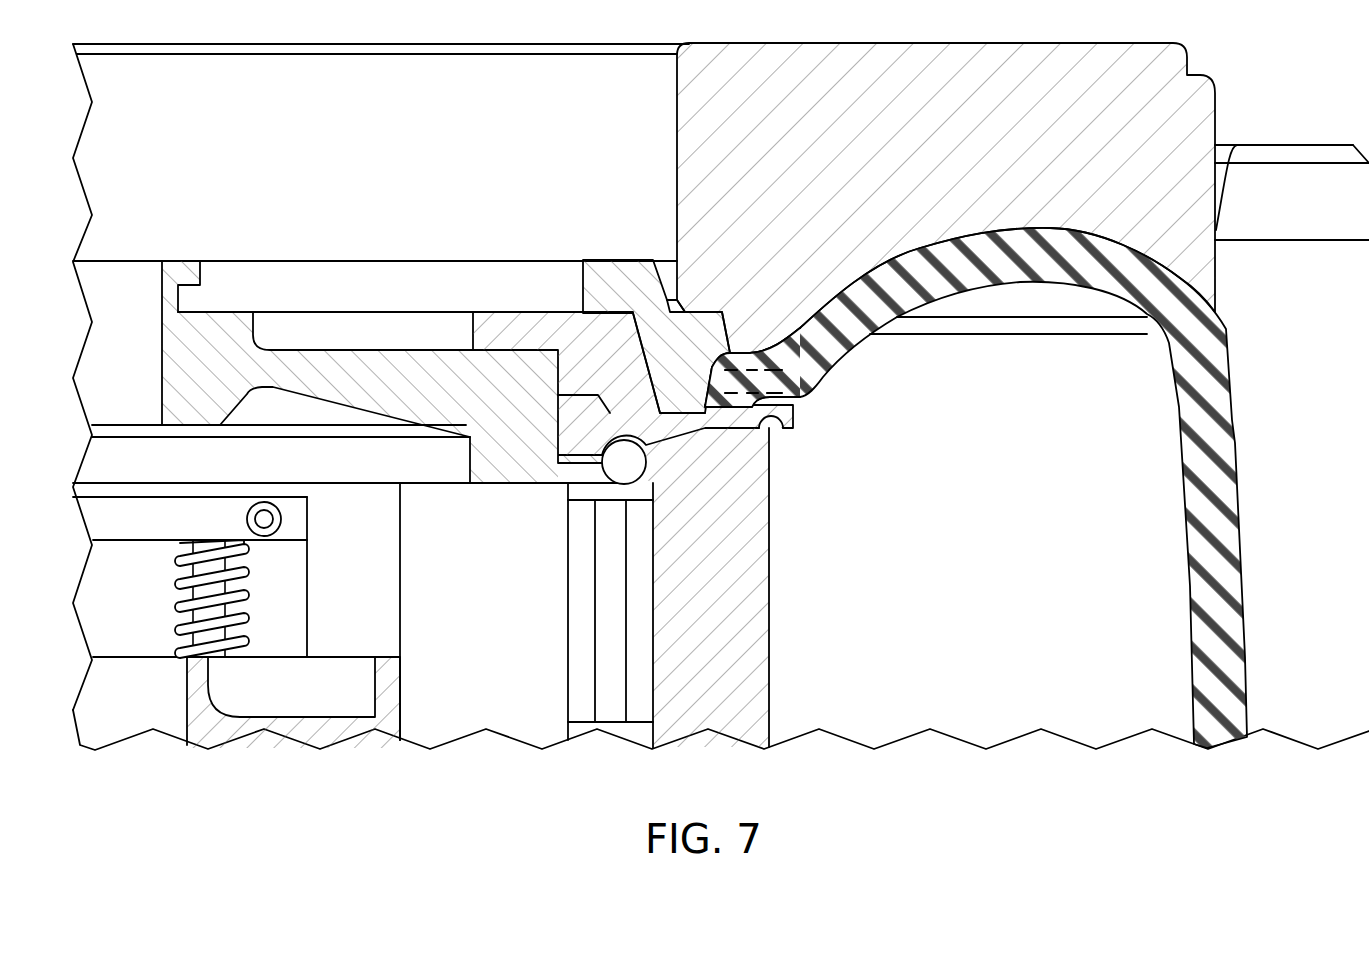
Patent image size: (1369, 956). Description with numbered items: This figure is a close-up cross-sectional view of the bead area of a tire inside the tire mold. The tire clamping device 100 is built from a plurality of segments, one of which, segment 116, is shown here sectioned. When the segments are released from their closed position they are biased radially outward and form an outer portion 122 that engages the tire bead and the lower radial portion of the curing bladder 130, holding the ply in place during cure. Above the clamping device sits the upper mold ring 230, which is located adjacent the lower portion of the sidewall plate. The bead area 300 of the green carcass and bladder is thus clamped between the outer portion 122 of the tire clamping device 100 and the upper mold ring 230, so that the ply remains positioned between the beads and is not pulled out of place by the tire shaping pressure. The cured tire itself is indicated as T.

The tire clamping device 100 is at (803, 550).
The segment 116 is at (769, 606).
The outer portion 122 is at (776, 416).
The curing bladder 130 is at (763, 397).
The upper mold ring 230 is at (626, 272).
The bead area 300 is at (758, 367).
The tire T is at (1223, 465).